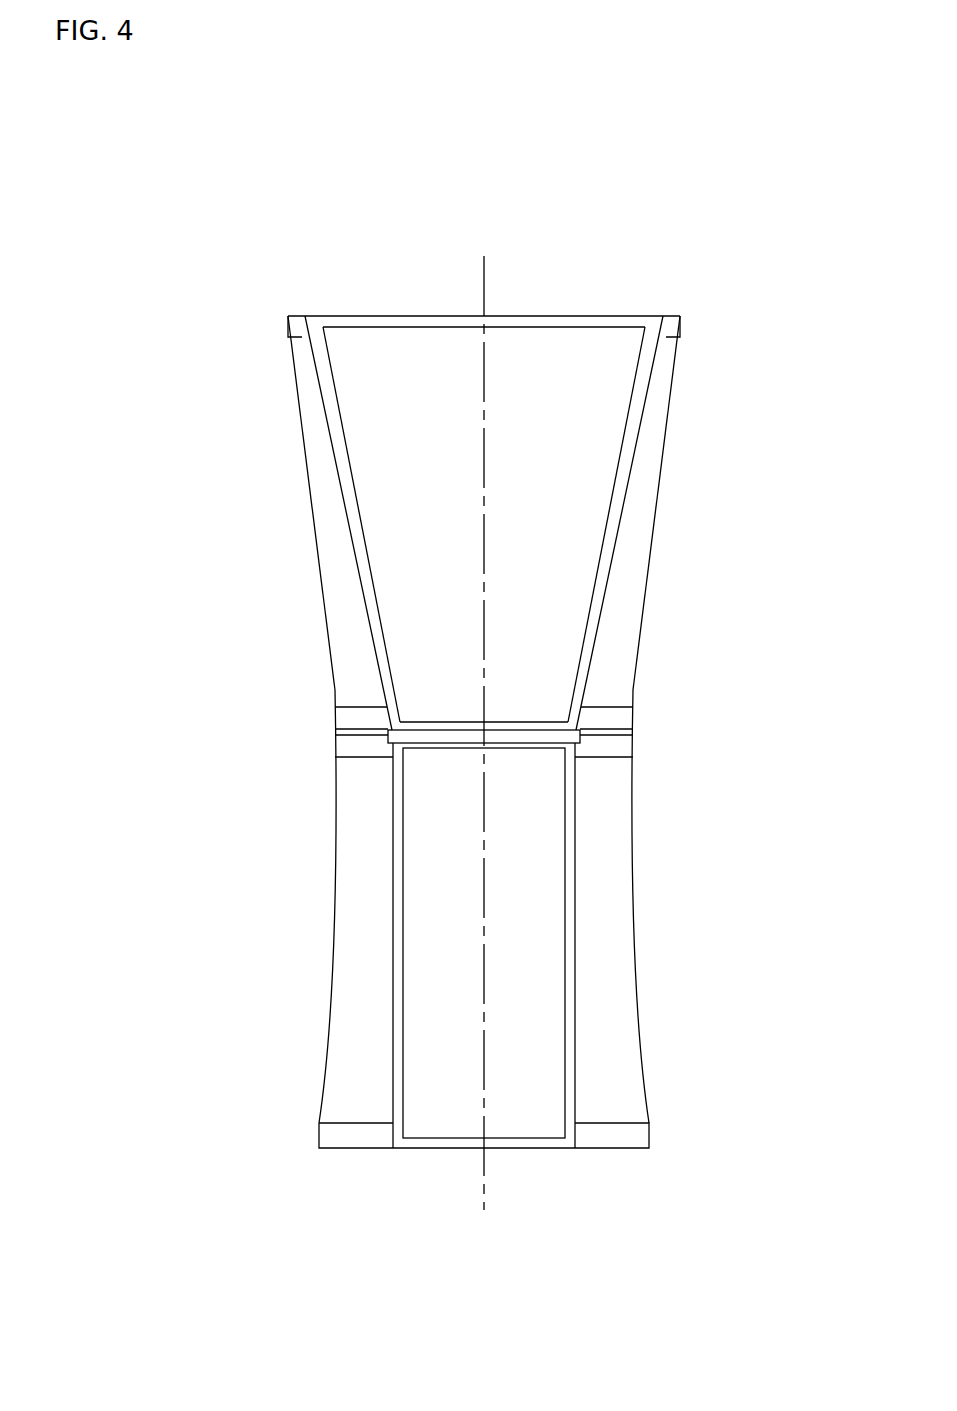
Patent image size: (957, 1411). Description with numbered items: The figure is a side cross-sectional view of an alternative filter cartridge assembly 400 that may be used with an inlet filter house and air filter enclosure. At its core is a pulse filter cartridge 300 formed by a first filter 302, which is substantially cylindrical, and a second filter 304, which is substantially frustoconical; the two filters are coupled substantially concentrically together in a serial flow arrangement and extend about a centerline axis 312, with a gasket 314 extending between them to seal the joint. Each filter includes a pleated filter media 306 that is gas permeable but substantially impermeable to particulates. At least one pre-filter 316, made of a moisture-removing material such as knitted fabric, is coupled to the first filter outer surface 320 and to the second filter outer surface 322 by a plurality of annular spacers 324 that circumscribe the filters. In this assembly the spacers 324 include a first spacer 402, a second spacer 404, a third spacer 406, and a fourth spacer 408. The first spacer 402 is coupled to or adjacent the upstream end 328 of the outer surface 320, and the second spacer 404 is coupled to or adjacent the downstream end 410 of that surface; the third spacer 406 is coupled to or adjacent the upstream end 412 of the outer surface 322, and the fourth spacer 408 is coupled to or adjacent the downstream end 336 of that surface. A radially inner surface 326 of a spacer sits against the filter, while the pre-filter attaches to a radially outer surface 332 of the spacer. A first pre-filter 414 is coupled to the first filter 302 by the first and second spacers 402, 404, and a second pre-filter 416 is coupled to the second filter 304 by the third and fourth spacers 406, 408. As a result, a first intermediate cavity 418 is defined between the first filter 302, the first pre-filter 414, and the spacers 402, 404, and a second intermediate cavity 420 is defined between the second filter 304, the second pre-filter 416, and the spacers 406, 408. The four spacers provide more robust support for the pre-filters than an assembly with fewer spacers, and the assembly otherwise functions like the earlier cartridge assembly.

The filter cartridge assembly 400 is at (195, 205).
The pulse filter cartridge 300 is at (632, 316).
The first filter 302 is at (575, 925).
The second filter 304 is at (622, 524).
The pleated filter media 306 is at (366, 556).
The centerline axis 312 is at (484, 270).
The gasket 314 is at (580, 738).
The pre-filter 316 is at (317, 828).
The outer surface of first filter 320 is at (393, 1014).
The outer surface of second filter 322 is at (332, 452).
The spacer 324 is at (333, 1208).
The radially inner surface of spacer 326 is at (396, 1150).
The upstream end of outer surface 328 is at (390, 1152).
The radially outer surface of spacer 332 is at (319, 1140).
The downstream end of outer surface 336 is at (312, 307).
The first spacer 402 is at (333, 1150).
The second spacer 404 is at (362, 758).
The third spacer 406 is at (360, 705).
The fourth spacer 408 is at (298, 315).
The downstream end of outer surface 410 is at (582, 766).
The upstream end of outer surface 412 is at (598, 697).
The first pre-filter 414 is at (337, 909).
The second pre-filter 416 is at (323, 570).
The first intermediate cavity 418 is at (388, 972).
The second intermediate cavity 420 is at (375, 669).